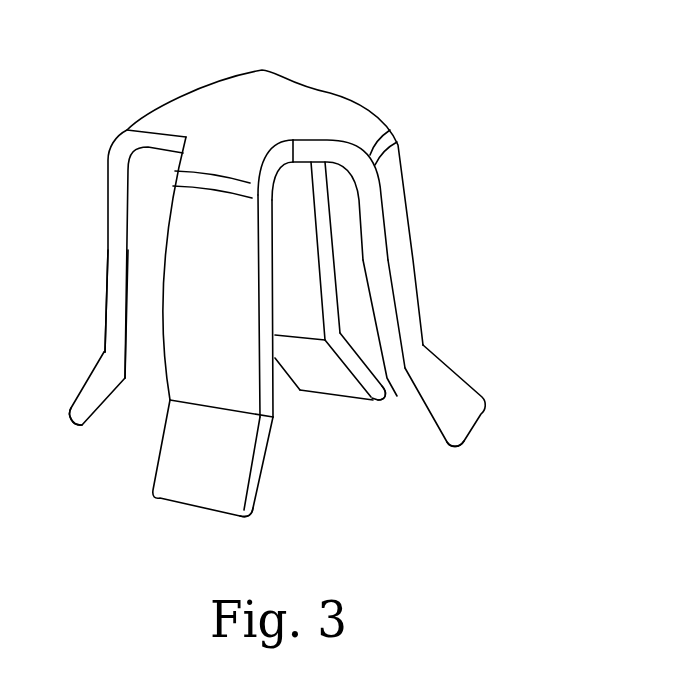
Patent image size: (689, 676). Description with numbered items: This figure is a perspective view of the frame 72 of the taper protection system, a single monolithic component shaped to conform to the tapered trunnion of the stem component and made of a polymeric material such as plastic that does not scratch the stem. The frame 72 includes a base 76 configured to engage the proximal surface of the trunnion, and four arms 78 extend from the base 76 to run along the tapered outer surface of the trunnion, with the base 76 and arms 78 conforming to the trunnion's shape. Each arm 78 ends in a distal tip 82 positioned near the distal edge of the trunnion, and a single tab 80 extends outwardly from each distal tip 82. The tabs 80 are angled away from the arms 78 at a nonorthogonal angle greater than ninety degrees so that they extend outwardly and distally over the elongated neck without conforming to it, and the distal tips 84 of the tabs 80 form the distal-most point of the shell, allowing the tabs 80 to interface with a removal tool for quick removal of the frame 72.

The frame 72 is at (466, 86).
The base 76 is at (170, 110).
The arms 78 is at (184, 308).
The tab 80 is at (82, 384).
The distal tip 82 is at (104, 350).
The distal tips 84 is at (70, 405).